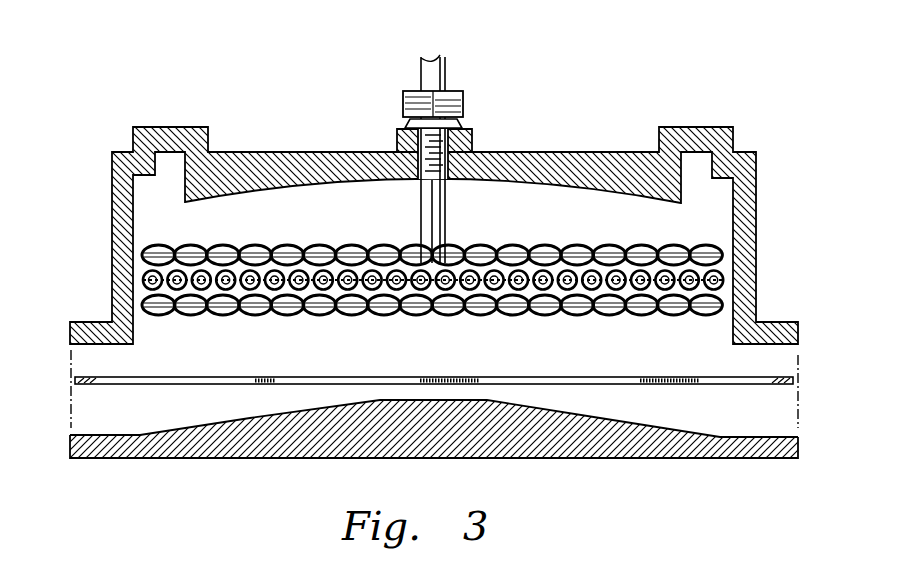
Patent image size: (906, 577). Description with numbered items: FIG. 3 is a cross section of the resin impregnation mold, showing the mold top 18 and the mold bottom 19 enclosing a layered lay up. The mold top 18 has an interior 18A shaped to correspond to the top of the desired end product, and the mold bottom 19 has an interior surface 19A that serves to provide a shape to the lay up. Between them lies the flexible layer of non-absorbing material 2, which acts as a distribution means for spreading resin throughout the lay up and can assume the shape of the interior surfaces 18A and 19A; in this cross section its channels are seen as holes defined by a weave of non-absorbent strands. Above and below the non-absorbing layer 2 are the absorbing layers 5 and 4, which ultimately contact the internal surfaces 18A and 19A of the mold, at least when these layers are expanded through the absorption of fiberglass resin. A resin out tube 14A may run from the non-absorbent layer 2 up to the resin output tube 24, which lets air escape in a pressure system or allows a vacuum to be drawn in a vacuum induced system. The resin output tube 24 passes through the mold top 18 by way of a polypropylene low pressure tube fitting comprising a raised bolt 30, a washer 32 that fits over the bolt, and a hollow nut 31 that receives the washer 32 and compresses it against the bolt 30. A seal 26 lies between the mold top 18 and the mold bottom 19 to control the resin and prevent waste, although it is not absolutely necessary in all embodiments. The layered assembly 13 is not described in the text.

The flexible layer of non-absorbing material 2 is at (723, 286).
The absorbing layer 4 is at (578, 308).
The absorbing layer 5 is at (579, 256).
The layered sensing element 13 is at (425, 287).
The resin out tube 14A is at (446, 205).
The mold top 18 is at (441, 235).
The interior of the top mold 18A is at (225, 197).
The mold bottom 19 is at (434, 450).
The interior of the mold bottom 19A is at (240, 420).
The resin output tube 24 is at (447, 87).
The seal 26 is at (322, 376).
The raised bolt 30 is at (473, 142).
The hollow nut 31 is at (450, 108).
The washer 32 is at (409, 127).